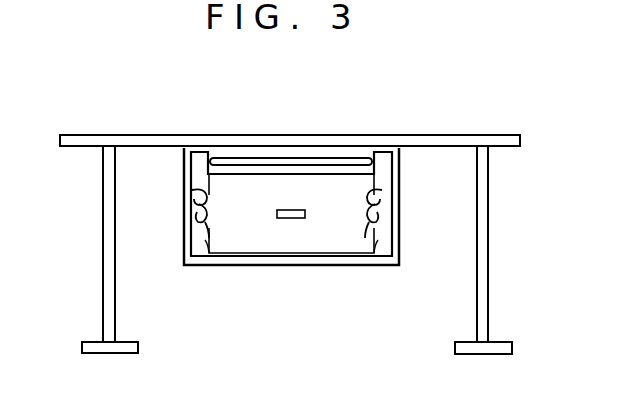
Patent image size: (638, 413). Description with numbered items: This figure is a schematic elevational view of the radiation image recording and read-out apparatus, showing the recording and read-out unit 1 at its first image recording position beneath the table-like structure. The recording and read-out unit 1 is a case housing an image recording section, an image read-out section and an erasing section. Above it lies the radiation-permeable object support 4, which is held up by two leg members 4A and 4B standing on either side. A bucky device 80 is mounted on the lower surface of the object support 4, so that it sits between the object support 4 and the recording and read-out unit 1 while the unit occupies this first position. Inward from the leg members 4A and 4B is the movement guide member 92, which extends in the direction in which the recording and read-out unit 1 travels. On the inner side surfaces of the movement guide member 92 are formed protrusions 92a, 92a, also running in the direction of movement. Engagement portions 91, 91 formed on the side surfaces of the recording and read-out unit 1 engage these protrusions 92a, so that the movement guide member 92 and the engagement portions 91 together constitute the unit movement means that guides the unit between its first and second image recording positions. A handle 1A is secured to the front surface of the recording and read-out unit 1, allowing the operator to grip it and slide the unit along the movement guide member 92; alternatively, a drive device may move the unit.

The radiation-permeable object support 4 is at (161, 133).
The leg member 4A is at (488, 218).
The leg member 4B is at (103, 210).
The bucky device 80 is at (298, 133).
The movement guide member 92 is at (433, 250).
The protrusion 92a is at (196, 192).
The engagement portion 91 is at (195, 232).
The recording and read-out unit 1 is at (212, 268).
The handle 1A is at (305, 210).